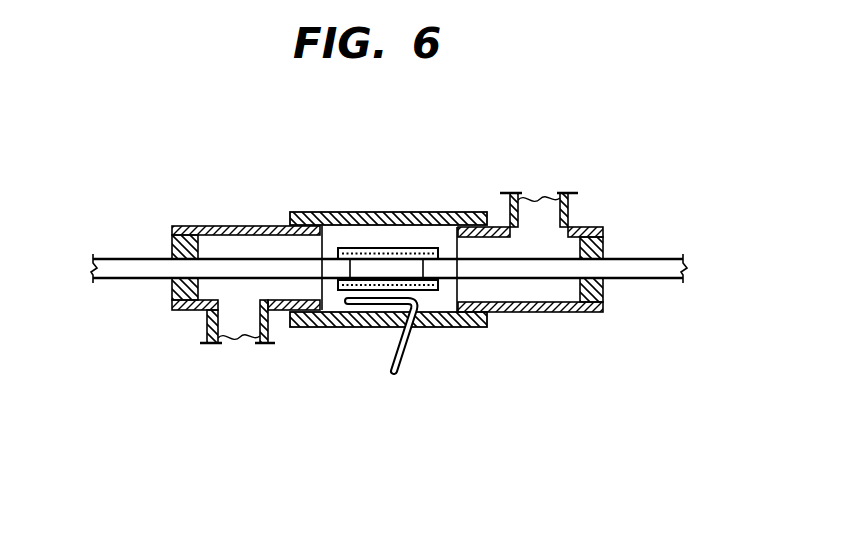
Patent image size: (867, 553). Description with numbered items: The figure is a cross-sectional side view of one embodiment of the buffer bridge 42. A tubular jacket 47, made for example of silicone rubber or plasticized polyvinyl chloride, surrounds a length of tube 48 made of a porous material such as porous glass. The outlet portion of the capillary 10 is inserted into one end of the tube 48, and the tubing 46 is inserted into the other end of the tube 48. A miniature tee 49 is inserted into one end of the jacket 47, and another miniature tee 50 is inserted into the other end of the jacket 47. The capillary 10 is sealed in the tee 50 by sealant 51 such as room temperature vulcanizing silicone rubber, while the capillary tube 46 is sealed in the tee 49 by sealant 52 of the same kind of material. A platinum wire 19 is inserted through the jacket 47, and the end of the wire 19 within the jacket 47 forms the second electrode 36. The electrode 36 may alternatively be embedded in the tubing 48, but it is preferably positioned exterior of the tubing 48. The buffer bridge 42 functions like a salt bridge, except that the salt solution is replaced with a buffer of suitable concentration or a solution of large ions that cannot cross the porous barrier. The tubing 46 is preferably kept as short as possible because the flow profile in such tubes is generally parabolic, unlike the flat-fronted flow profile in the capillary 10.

The capillary 10 is at (140, 279).
The platinum wire 19 is at (407, 345).
The second electrode 36 is at (333, 328).
The buffer bridge 42 is at (345, 433).
The tubing 46 is at (655, 279).
The tubular jacket 47 is at (325, 212).
The tube 48 is at (407, 248).
The miniature tee 49 is at (584, 227).
The miniature tee 50 is at (208, 226).
The sealant 51 is at (172, 248).
The sealant 52 is at (605, 245).